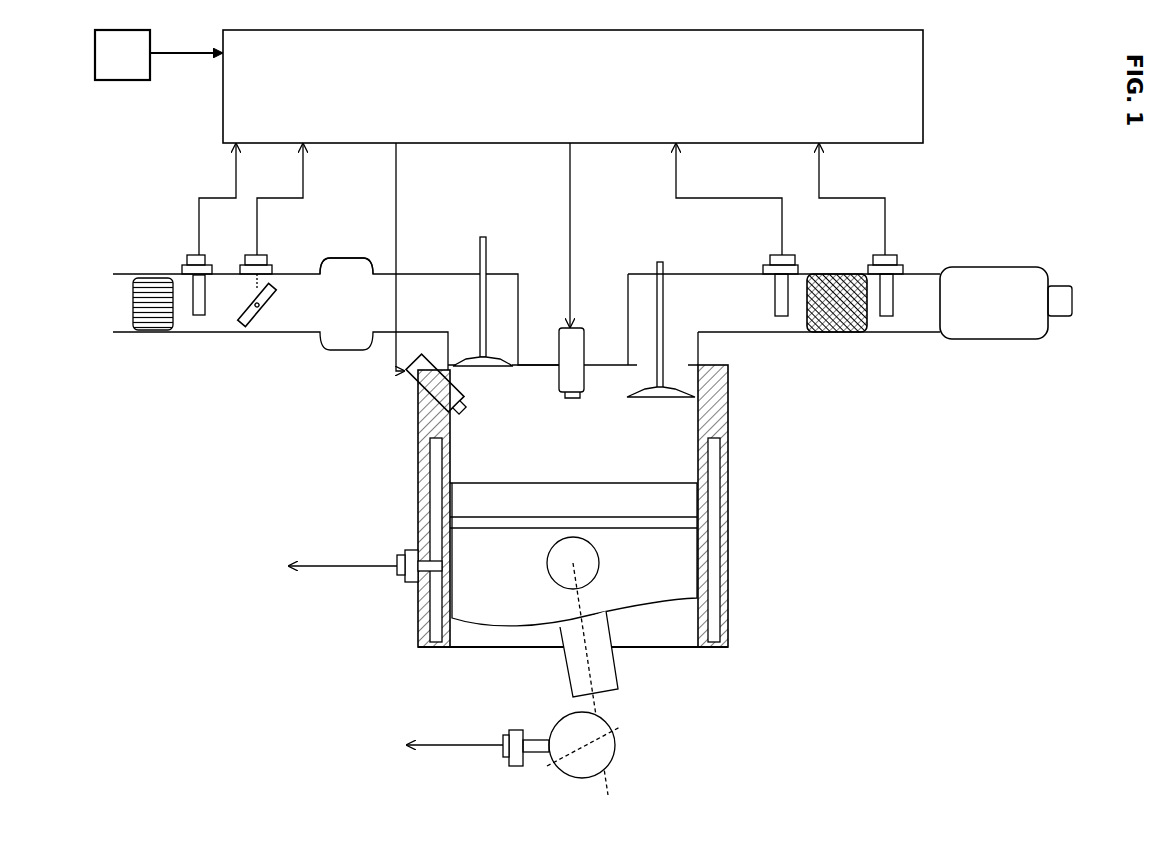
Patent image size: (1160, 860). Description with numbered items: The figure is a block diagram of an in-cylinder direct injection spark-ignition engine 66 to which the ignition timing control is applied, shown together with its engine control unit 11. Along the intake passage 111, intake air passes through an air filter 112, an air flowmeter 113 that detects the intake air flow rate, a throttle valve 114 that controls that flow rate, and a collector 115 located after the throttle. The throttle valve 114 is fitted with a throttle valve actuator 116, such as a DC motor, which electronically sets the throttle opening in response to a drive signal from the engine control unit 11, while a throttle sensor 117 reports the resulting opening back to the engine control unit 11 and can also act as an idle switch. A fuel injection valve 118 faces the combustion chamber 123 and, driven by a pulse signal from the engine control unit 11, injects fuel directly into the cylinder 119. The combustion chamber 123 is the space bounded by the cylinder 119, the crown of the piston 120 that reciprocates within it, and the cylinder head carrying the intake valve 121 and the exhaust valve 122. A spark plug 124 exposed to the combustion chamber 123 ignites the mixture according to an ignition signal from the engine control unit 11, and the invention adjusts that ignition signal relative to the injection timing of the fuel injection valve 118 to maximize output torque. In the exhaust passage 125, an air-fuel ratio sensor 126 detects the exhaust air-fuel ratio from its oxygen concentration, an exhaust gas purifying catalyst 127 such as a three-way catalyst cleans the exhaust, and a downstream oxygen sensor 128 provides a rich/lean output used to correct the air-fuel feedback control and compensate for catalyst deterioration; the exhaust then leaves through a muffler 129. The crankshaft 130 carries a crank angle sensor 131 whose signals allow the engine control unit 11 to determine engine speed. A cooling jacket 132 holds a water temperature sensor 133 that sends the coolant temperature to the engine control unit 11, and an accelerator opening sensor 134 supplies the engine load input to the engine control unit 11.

The engine control unit 11 is at (573, 86).
The engine 66 is at (124, 200).
The intake passage 111 is at (222, 404).
The air filter 112 is at (160, 333).
The air flowmeter 113 is at (210, 333).
The throttle valve 114 is at (262, 333).
The collector 115 is at (340, 345).
The throttle valve actuator 116 is at (250, 254).
The throttle sensor 117 is at (270, 254).
The fuel injection valve 118 is at (415, 395).
The cylinder 119 is at (730, 440).
The piston 120 is at (690, 573).
The intake valve 121 is at (478, 288).
The exhaust valve 122 is at (730, 418).
The combustion chamber 123 is at (574, 424).
The spark plug 124 is at (578, 340).
The exhaust passage 125 is at (882, 412).
The air-fuel ratio sensor 126 is at (795, 258).
The exhaust gas purifying catalyst 127 is at (845, 335).
The oxygen sensor 128 is at (898, 256).
The muffler 129 is at (990, 335).
The crankshaft 130 is at (618, 742).
The crank angle sensor 131 is at (506, 760).
The cooling jacket 132 is at (418, 482).
The water temperature sensor 133 is at (400, 580).
The accelerator opening sensor 134 is at (158, 55).